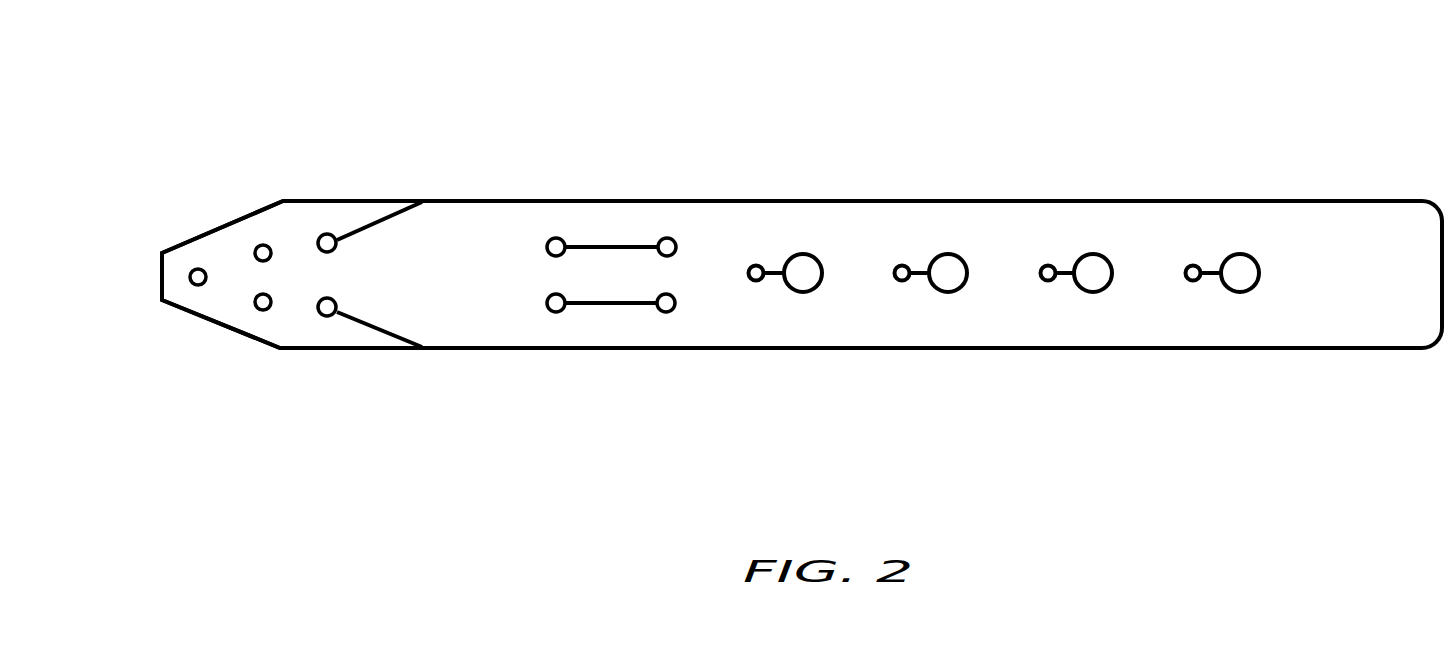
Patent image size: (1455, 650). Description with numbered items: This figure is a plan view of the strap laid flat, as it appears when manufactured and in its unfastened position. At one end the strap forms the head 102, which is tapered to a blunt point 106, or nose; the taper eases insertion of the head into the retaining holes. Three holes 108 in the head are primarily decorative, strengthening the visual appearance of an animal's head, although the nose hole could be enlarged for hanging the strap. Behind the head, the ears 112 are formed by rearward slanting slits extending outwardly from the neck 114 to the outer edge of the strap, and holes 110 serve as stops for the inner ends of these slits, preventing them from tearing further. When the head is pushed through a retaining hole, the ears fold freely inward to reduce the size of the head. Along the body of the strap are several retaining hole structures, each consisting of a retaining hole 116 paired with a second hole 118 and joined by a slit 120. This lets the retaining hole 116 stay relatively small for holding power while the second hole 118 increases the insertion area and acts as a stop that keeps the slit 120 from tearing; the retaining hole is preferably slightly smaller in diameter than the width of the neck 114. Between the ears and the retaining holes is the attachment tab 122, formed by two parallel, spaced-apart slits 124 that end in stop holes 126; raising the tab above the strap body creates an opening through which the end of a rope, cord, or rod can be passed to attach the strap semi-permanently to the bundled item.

The head 102 is at (793, 230).
The blunt point 106 is at (215, 303).
The holes 108 is at (247, 328).
The holes 110 is at (369, 269).
The ears 112 is at (414, 277).
The neck 114 is at (239, 171).
The retaining hole 116 is at (1068, 340).
The second hole 118 is at (1047, 370).
The slit 120 is at (1042, 197).
The attachment tab 122 is at (537, 144).
The slits 124 is at (647, 294).
The stop holes 126 is at (613, 276).